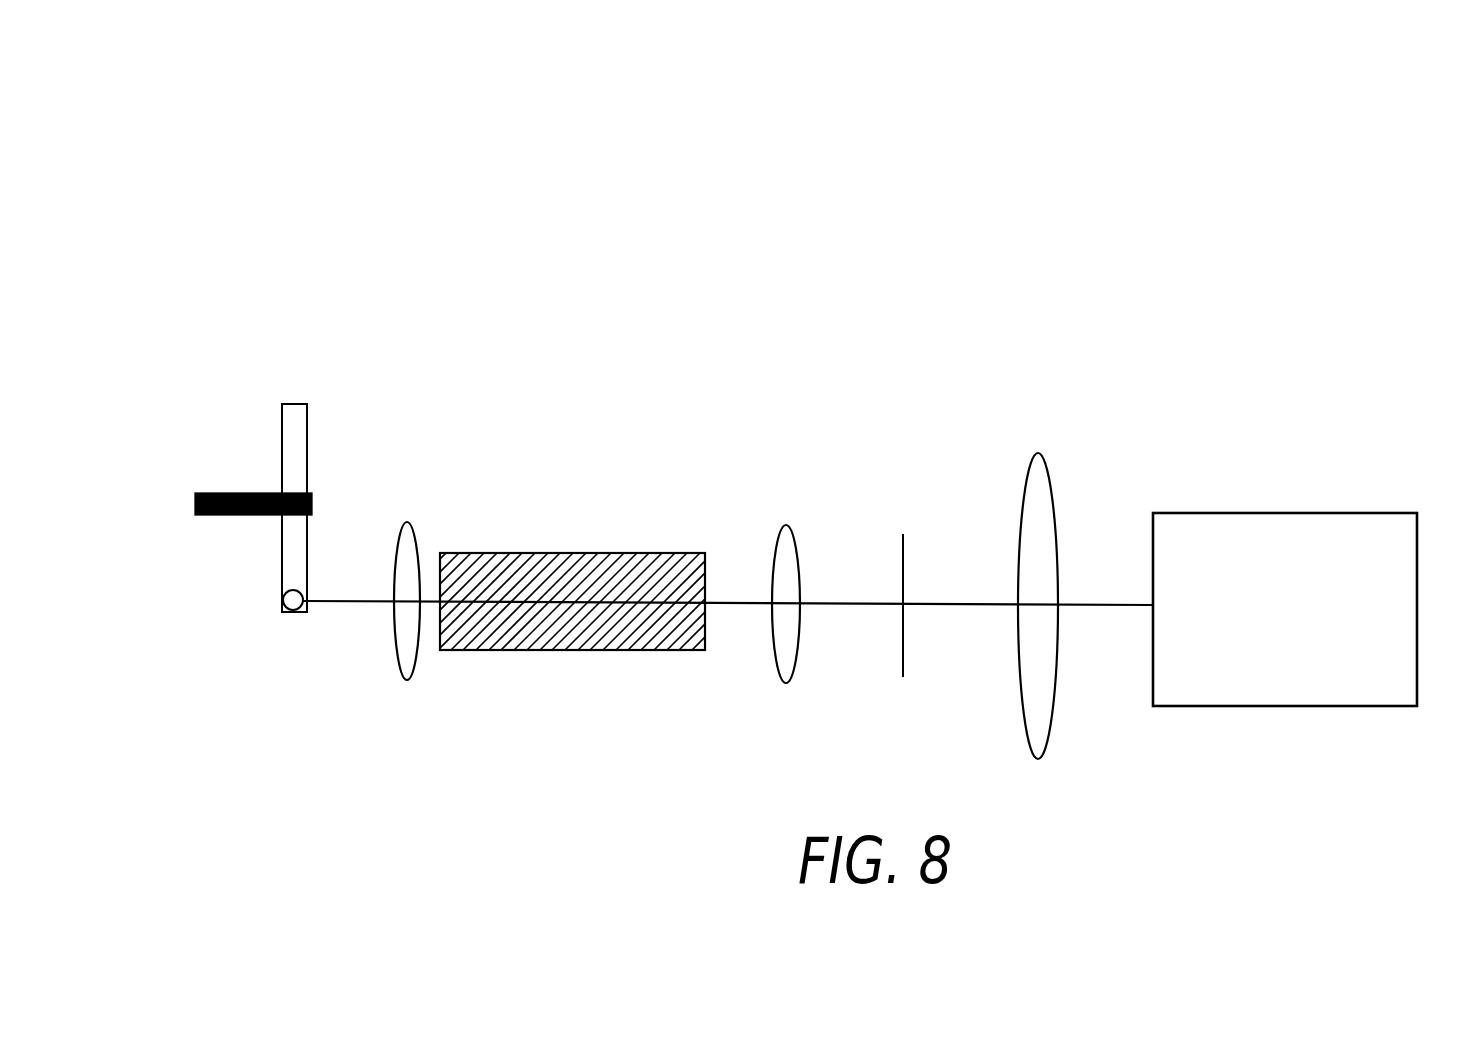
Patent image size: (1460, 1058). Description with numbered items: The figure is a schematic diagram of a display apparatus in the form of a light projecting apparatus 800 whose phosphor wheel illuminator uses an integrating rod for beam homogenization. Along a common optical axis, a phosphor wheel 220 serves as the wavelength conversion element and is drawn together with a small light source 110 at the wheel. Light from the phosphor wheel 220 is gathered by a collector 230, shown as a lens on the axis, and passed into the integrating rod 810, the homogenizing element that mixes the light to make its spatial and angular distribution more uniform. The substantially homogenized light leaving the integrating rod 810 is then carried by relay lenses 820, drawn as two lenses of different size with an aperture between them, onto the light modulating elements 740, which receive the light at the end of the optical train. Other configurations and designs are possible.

The light projecting apparatus 800 is at (365, 268).
The phosphor wheel 220 is at (270, 447).
The light source (lamp) 110 is at (283, 632).
The collector 230 is at (407, 521).
The integrating rod 810 is at (568, 533).
The relay lenses 820 is at (786, 525).
The light modulating elements 740 is at (1360, 513).